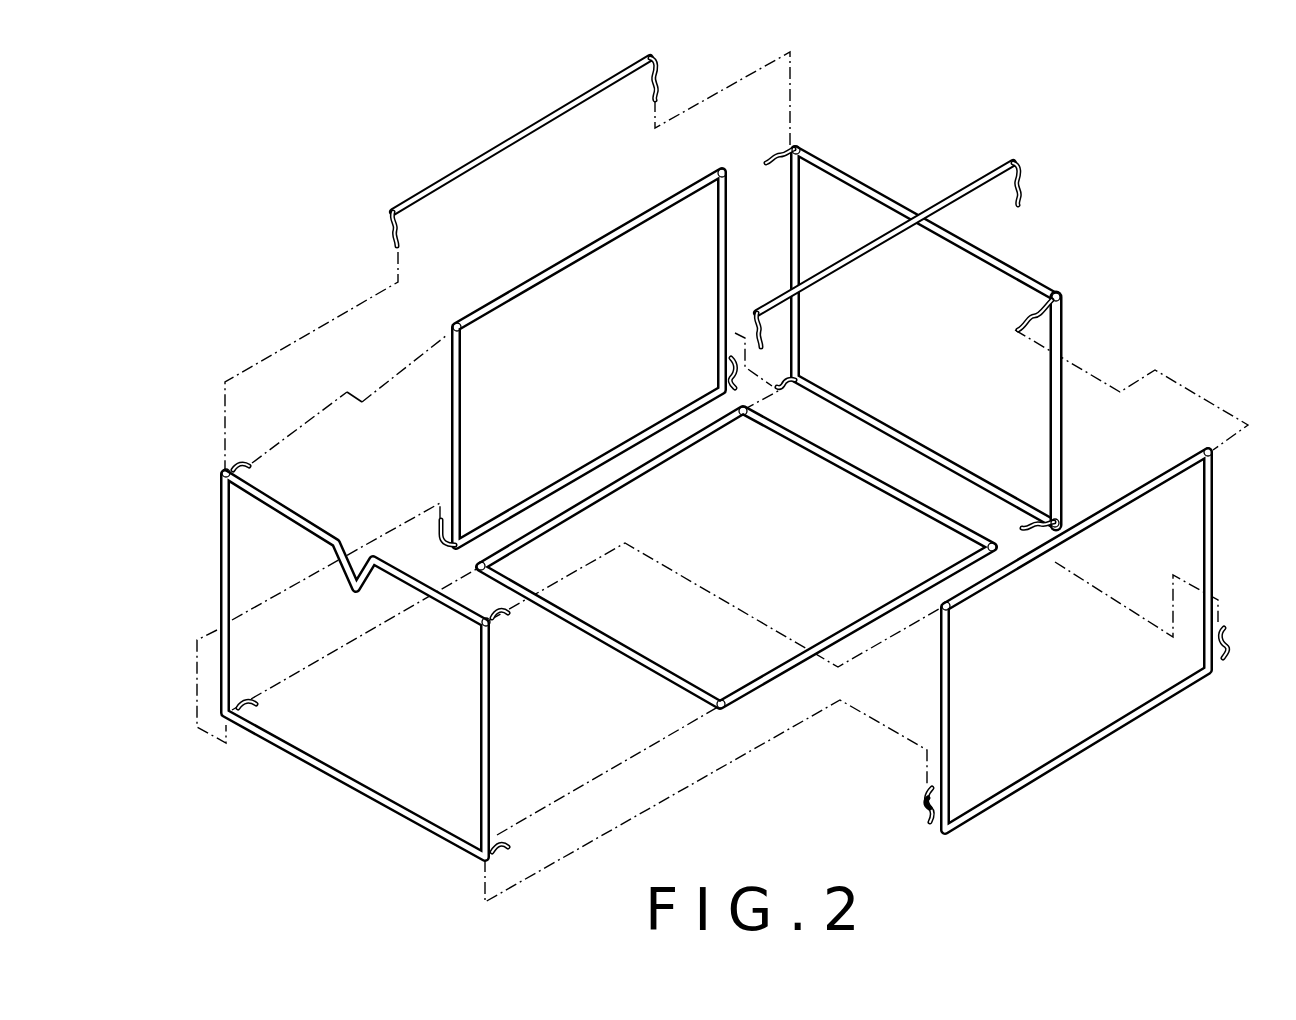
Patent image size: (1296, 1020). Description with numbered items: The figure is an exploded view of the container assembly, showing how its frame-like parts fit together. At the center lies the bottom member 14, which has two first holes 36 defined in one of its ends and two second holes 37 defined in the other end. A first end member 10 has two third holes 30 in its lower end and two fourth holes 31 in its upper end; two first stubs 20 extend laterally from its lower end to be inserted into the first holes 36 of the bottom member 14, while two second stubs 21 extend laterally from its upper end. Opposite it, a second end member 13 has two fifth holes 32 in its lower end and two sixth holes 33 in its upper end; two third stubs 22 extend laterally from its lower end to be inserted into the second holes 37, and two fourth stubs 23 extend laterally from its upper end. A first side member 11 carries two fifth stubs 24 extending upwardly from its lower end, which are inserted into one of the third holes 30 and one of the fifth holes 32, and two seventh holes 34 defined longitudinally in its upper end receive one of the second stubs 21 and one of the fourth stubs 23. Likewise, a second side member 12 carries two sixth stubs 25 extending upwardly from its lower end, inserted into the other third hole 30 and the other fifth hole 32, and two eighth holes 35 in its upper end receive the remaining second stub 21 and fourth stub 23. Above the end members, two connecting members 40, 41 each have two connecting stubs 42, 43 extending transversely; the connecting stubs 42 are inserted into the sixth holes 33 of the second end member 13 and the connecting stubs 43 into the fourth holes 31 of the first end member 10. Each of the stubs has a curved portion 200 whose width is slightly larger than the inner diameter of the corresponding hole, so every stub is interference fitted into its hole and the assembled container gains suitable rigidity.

The first end member 10 is at (412, 782).
The first side member 11 is at (1055, 733).
The second side member 12 is at (600, 302).
The second end member 13 is at (1003, 308).
The bottom member 14 is at (692, 642).
The first stubs 20 is at (253, 716).
The second stubs 21 is at (250, 462).
The third stubs 22 is at (789, 390).
The fourth stubs 23 is at (773, 160).
The fifth stubs 24 is at (1230, 650).
The sixth stubs 25 is at (440, 542).
The third holes 30 is at (207, 725).
The fourth holes 31 is at (225, 468).
The fifth holes 32 is at (1048, 548).
The sixth holes 33 is at (800, 148).
The seventh holes 34 is at (1216, 451).
The eighth holes 35 is at (453, 326).
The first holes 36 is at (481, 563).
The second holes 37 is at (748, 420).
The connecting member 40 is at (968, 182).
The connecting member 41 is at (578, 108).
The connecting stubs 42 is at (660, 72).
The connecting stubs 43 is at (400, 215).
The curved portion 200 is at (924, 804).